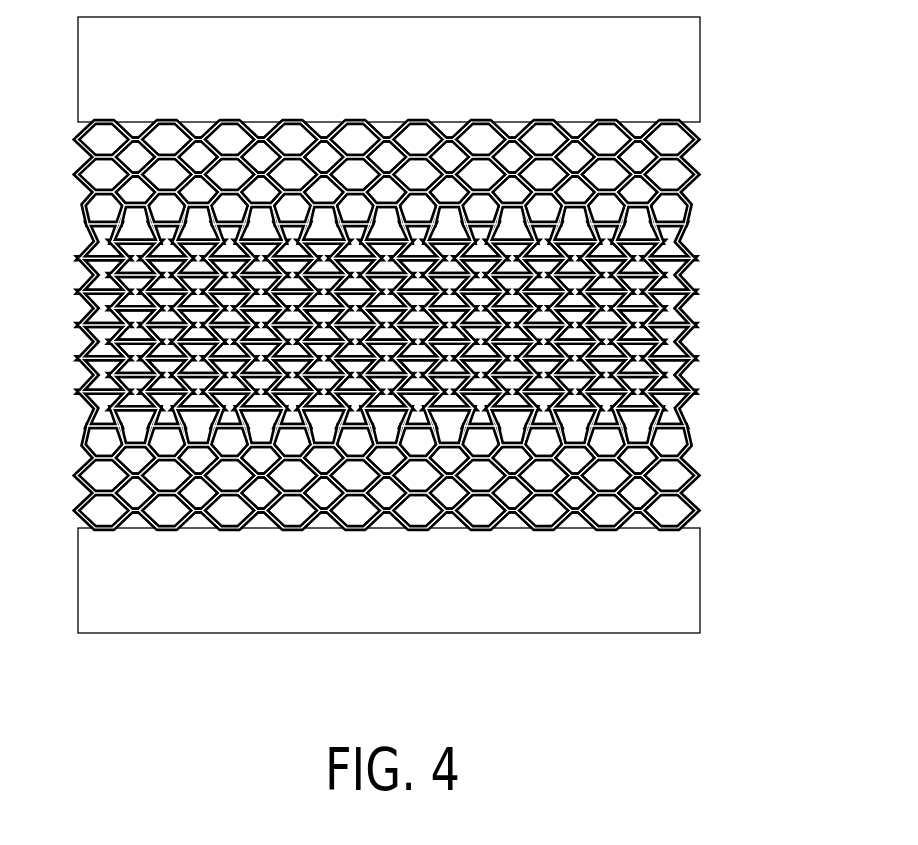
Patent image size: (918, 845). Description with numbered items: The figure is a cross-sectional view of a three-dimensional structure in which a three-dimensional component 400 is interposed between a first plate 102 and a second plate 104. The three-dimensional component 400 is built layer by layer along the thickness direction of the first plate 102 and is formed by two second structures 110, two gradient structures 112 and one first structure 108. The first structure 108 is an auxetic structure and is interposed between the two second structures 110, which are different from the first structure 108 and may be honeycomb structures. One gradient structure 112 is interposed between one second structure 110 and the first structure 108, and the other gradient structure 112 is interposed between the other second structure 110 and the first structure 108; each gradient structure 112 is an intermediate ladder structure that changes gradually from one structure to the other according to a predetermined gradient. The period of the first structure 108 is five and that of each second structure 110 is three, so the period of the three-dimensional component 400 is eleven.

The first plate 102 is at (672, 76).
The second plate 104 is at (672, 584).
The first structure 108 is at (715, 223).
The second structure 110 is at (715, 121).
The gradient structure 112 is at (79, 198).
The three-dimensional component 400 is at (435, 325).